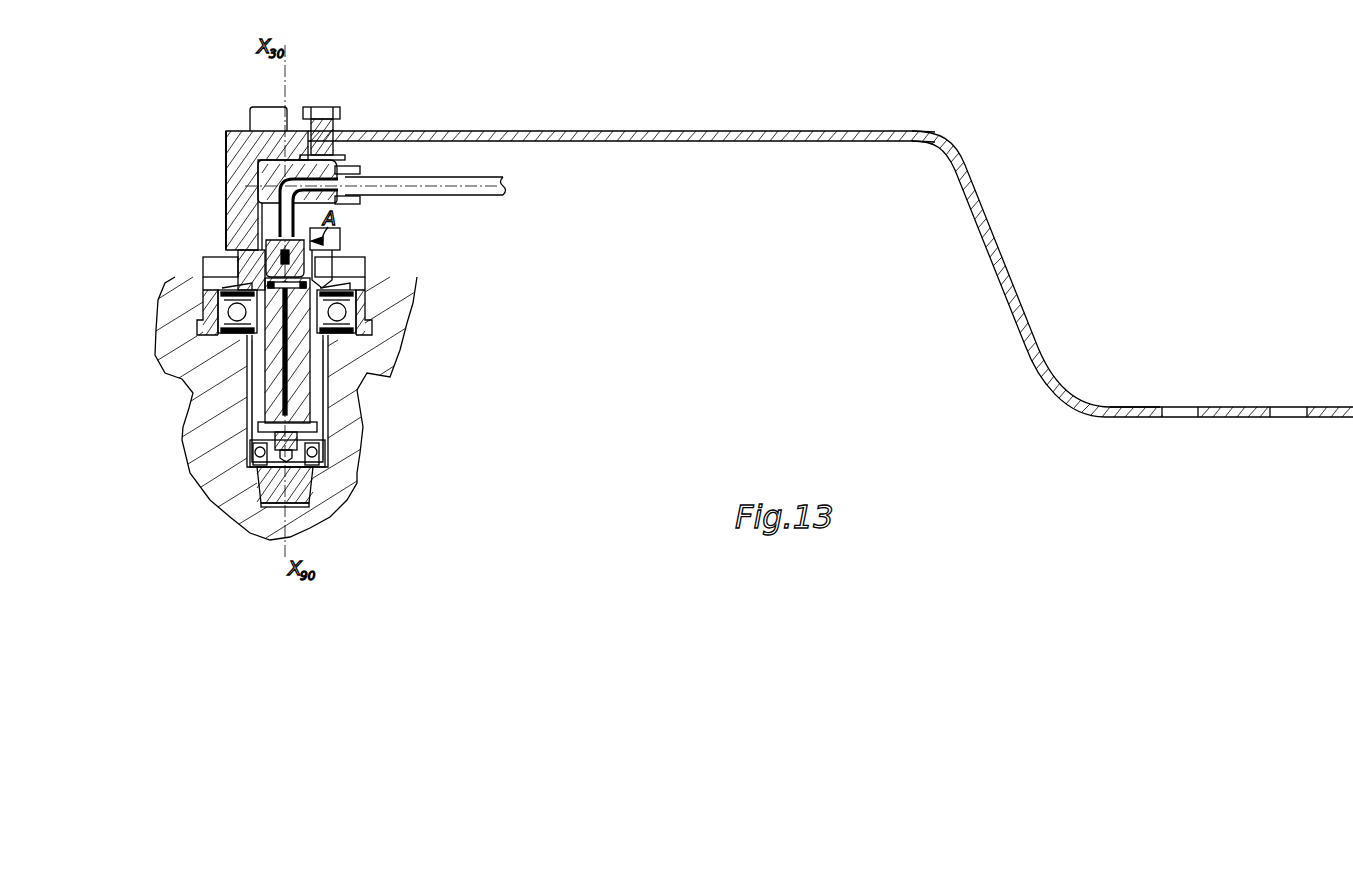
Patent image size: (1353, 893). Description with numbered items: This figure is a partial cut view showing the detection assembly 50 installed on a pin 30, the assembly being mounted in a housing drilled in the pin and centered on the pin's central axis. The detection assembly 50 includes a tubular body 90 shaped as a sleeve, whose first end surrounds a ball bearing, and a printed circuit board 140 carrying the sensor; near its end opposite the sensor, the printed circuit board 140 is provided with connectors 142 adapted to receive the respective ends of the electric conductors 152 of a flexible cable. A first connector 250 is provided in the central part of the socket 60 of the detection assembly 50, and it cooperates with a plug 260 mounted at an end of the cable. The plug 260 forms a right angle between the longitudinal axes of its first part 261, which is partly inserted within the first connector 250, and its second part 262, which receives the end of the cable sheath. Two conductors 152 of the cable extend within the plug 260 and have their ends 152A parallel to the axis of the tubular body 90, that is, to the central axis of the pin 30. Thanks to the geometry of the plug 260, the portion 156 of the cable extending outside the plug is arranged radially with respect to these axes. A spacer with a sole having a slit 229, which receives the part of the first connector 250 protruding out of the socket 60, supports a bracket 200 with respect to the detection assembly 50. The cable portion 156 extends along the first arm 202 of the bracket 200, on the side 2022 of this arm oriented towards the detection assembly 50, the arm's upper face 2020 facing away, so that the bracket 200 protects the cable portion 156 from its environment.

The pin 30 is at (337, 490).
The detection assembly 50 is at (343, 380).
The socket 60 is at (195, 262).
The tubular body 90 is at (317, 408).
The printed circuit board 140 is at (273, 358).
The connectors 142 is at (367, 286).
The electric conductors 152 is at (345, 153).
The ends of the conductors 152A is at (257, 228).
The portion of cable 156 is at (503, 170).
The bracket 200 is at (1013, 203).
The first arm 202 is at (652, 130).
The upper surface 2020 is at (770, 122).
The side of the first arm 2022 is at (701, 150).
The slit 229 is at (357, 240).
The first connector 250 is at (218, 239).
The plug 260 is at (250, 130).
The first part of the plug 261 is at (238, 227).
The second part of the plug 262 is at (315, 108).